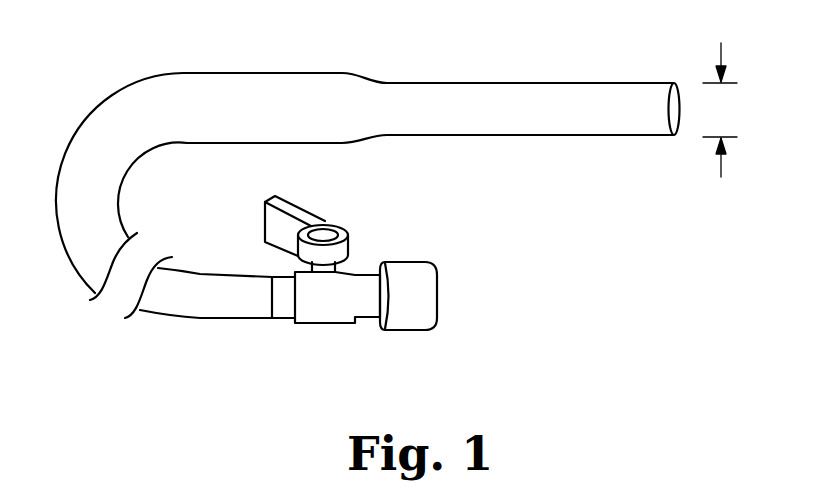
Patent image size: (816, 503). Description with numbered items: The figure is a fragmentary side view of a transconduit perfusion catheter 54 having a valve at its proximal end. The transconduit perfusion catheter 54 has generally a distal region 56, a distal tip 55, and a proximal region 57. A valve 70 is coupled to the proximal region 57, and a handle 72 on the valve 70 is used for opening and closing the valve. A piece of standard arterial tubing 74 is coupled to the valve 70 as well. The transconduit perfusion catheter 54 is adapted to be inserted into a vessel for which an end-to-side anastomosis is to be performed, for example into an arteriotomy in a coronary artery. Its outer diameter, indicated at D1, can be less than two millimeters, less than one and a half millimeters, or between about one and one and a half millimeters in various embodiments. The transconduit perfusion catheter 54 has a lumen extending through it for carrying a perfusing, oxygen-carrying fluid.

The transconduit perfusion catheter 54 is at (263, 73).
The distal tip 55 is at (675, 138).
The distal region 56 is at (638, 82).
The proximal region 57 is at (225, 320).
The valve 70 is at (337, 328).
The handle 72 is at (347, 222).
The standard arterial tubing 74 is at (435, 330).
The outer diameter D1 is at (720, 110).